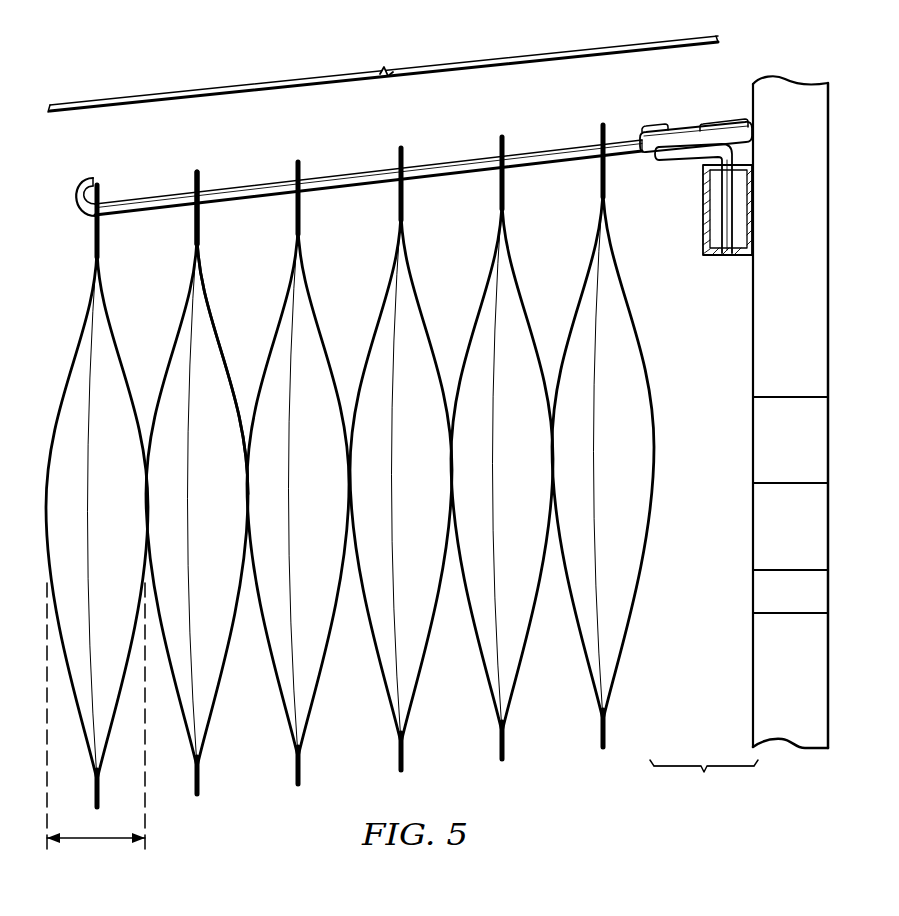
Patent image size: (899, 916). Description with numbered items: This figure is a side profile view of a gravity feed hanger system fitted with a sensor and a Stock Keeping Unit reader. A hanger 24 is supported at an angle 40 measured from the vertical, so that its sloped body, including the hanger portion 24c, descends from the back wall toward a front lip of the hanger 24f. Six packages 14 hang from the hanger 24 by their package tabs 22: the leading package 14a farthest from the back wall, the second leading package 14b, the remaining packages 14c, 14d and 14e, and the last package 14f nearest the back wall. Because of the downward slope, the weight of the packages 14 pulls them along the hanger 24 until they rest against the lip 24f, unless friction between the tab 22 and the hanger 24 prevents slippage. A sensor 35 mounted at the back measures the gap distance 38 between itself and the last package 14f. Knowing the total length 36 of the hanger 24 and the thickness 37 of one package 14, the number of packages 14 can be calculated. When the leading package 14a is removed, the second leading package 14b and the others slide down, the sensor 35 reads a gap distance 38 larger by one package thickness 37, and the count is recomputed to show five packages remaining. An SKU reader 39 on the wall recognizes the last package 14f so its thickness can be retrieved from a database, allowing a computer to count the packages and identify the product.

The package 14 is at (211, 310).
The leading package 14a is at (135, 521).
The second leading package 14b is at (235, 511).
The remaining package 14c is at (336, 498).
The remaining package 14d is at (438, 486).
The remaining package 14e is at (540, 474).
The last package 14f is at (640, 461).
The package tab 22 is at (202, 181).
The hanger 24 is at (344, 165).
The hanger 24c is at (452, 158).
The lip of the hanger 24f is at (87, 176).
The sensor 35 is at (813, 441).
The total length of the hanger 36 is at (383, 74).
The thickness of one package 37 is at (93, 840).
The gap distance 38 is at (704, 783).
The SKU reader 39 is at (813, 591).
The angle 40 is at (634, 164).